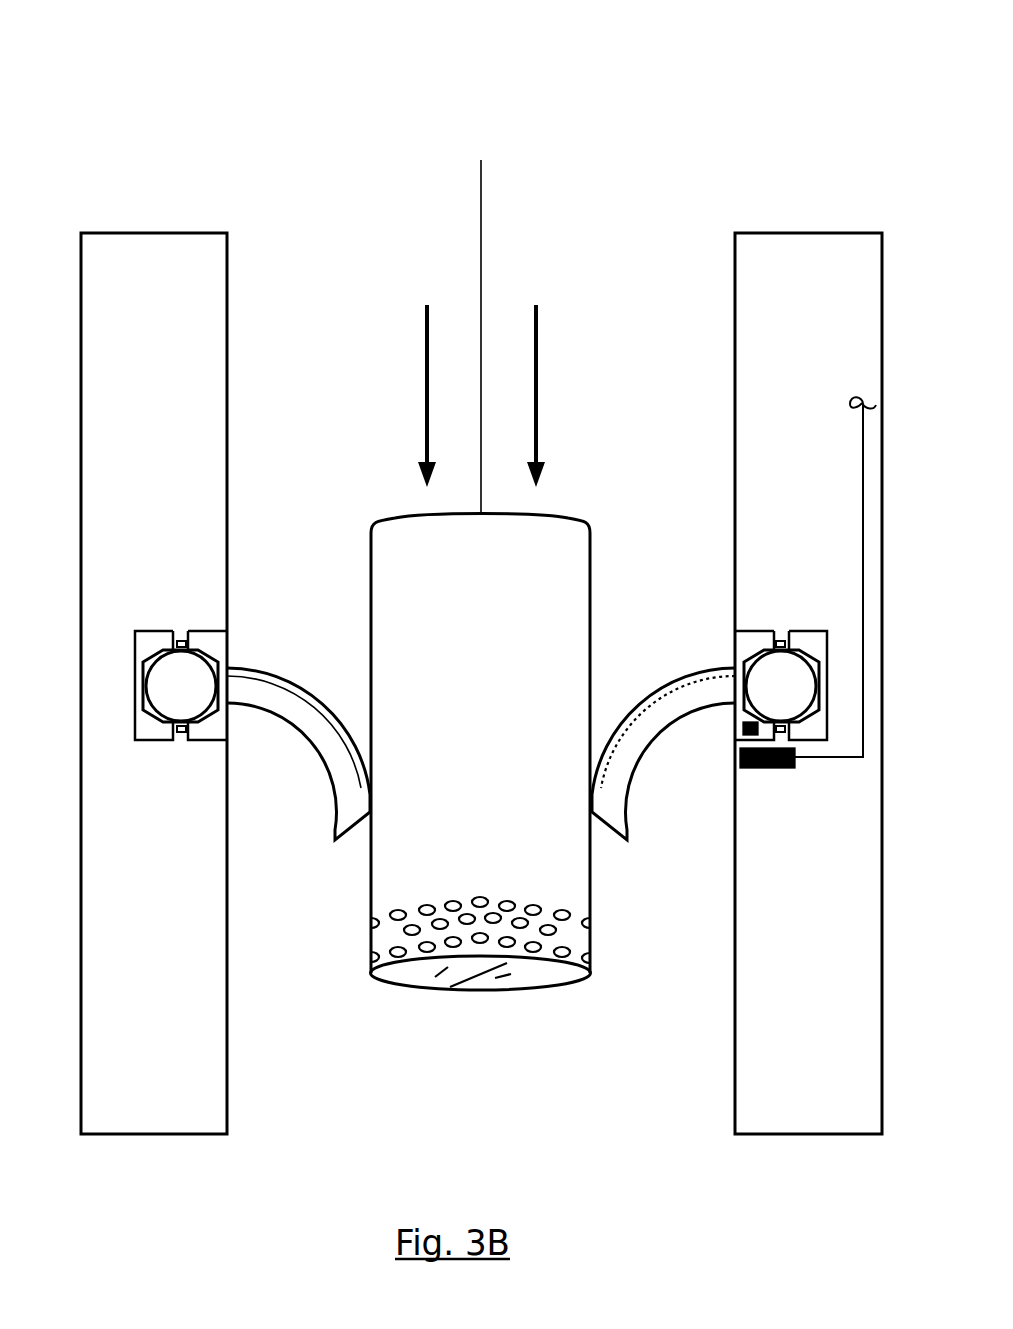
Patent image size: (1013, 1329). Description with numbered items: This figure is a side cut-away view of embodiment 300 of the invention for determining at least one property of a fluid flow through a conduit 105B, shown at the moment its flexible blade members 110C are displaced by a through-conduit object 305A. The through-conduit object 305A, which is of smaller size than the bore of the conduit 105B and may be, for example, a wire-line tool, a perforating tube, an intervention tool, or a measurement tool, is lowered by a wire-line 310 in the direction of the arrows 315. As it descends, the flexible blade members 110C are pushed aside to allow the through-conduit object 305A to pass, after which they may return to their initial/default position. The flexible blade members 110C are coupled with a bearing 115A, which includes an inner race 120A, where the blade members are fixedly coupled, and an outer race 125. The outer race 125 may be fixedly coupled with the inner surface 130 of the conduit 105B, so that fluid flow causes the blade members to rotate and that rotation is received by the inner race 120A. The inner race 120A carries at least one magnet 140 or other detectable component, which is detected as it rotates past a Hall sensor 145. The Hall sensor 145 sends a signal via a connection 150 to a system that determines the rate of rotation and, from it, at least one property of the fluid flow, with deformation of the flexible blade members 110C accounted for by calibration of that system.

The embodiment 300 is at (150, 82).
The conduit 105B is at (117, 233).
The inner surface 130 is at (735, 313).
The wire-line 310 is at (481, 235).
The arrows 315 is at (550, 350).
The through-conduit object 305A is at (515, 992).
The outer race 125 is at (155, 631).
The inner race 120A is at (212, 631).
The flexible blade members 110C is at (684, 652).
The bearing 115A is at (750, 614).
The magnet 140 is at (743, 733).
The Hall sensor 145 is at (757, 768).
The connection 150 is at (863, 468).